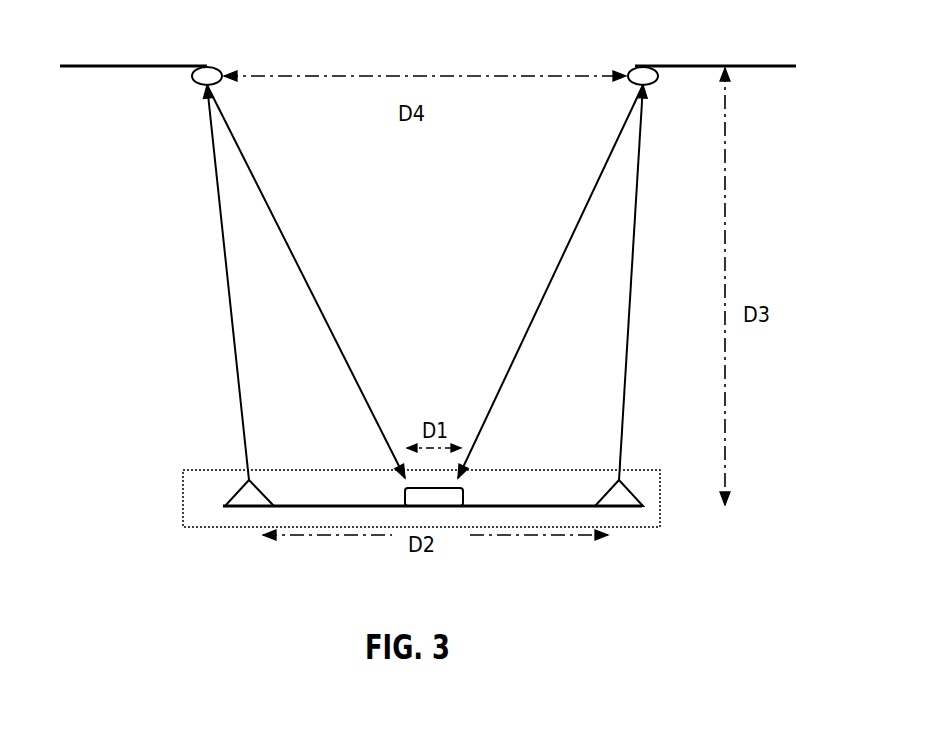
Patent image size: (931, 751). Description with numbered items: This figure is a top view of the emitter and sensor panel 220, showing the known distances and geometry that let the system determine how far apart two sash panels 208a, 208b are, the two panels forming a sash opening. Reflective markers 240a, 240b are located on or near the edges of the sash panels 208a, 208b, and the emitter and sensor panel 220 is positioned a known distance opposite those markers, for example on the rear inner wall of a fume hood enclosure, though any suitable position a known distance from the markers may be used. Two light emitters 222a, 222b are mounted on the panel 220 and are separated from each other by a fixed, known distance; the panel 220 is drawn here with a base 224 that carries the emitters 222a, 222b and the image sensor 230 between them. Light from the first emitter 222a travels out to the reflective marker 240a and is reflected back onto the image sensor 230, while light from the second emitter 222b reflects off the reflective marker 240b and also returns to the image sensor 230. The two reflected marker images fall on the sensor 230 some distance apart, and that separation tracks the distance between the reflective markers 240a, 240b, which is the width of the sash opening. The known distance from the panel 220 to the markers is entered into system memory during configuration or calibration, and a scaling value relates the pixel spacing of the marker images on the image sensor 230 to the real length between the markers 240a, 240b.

The sash panel 208a is at (138, 67).
The sash panel 208b is at (737, 68).
The reflective marker 240a is at (208, 66).
The reflective marker 240b is at (648, 65).
The emitter and sensor panel 220 is at (497, 447).
The light emitter 222a is at (232, 497).
The light emitter 222b is at (650, 490).
The substrate 224 is at (432, 491).
The image sensor 230 is at (438, 500).